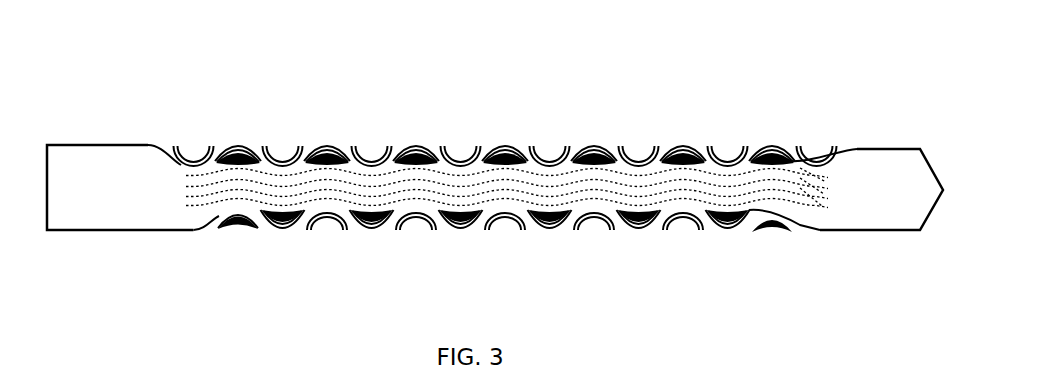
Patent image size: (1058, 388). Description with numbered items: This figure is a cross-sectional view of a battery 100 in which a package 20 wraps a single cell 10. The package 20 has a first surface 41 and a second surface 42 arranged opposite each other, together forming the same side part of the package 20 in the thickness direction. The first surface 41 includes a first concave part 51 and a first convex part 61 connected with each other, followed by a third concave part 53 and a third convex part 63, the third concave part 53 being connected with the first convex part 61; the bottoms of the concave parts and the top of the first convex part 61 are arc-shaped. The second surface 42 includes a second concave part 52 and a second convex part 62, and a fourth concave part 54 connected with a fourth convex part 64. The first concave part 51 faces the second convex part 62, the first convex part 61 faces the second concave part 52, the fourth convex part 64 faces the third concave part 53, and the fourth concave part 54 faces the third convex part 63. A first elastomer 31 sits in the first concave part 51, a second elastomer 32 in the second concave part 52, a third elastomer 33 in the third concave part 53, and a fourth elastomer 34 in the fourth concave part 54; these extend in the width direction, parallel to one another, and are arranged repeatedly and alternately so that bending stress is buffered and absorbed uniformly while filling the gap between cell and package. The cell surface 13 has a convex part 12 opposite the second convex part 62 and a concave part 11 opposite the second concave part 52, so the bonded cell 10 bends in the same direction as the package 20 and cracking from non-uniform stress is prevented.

The battery 100 is at (133, 50).
The cell 10 is at (272, 178).
The concave part 11 is at (578, 170).
The convex part 12 is at (518, 216).
The cell surface 13 is at (490, 175).
The package 20 is at (120, 145).
The first elastomer 31 is at (560, 147).
The second elastomer 32 is at (613, 228).
The third elastomer 33 is at (653, 148).
The fourth elastomer 34 is at (717, 220).
The first surface 41 is at (786, 148).
The second surface 42 is at (798, 163).
The first concave part 51 is at (545, 148).
The second concave part 52 is at (596, 200).
The third concave part 53 is at (640, 147).
The fourth concave part 54 is at (697, 228).
The first convex part 61 is at (593, 143).
The second convex part 62 is at (546, 200).
The third convex part 63 is at (683, 145).
The fourth convex part 64 is at (650, 230).